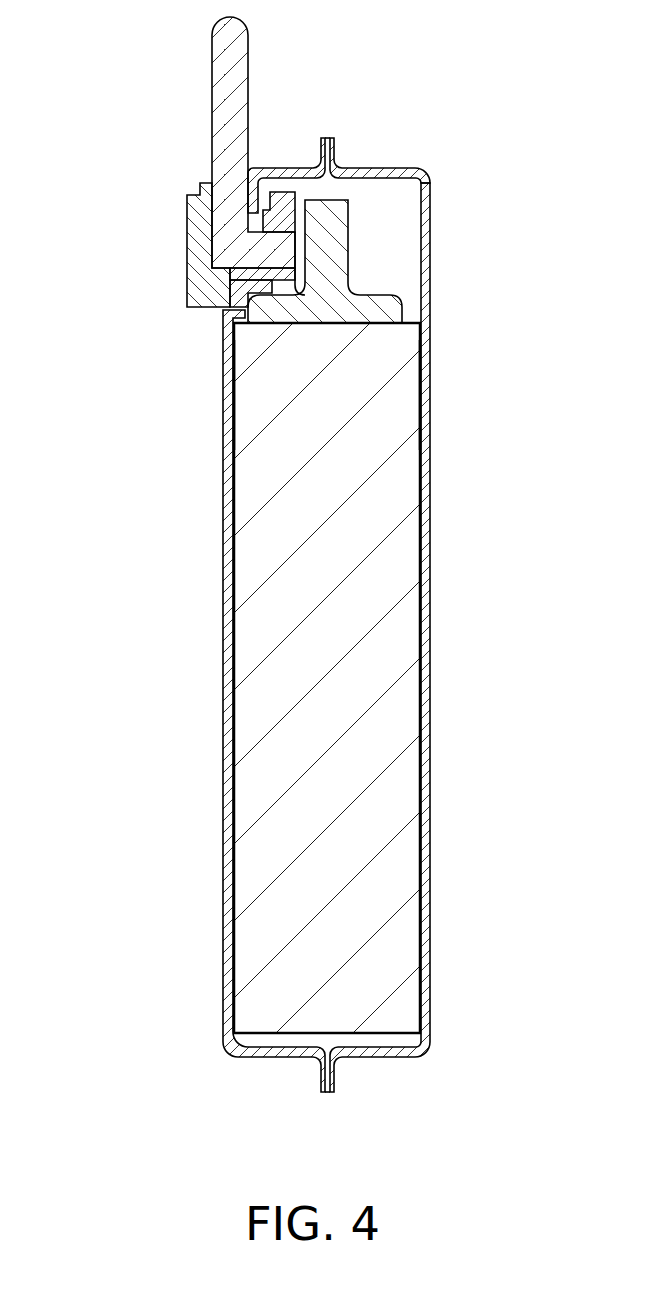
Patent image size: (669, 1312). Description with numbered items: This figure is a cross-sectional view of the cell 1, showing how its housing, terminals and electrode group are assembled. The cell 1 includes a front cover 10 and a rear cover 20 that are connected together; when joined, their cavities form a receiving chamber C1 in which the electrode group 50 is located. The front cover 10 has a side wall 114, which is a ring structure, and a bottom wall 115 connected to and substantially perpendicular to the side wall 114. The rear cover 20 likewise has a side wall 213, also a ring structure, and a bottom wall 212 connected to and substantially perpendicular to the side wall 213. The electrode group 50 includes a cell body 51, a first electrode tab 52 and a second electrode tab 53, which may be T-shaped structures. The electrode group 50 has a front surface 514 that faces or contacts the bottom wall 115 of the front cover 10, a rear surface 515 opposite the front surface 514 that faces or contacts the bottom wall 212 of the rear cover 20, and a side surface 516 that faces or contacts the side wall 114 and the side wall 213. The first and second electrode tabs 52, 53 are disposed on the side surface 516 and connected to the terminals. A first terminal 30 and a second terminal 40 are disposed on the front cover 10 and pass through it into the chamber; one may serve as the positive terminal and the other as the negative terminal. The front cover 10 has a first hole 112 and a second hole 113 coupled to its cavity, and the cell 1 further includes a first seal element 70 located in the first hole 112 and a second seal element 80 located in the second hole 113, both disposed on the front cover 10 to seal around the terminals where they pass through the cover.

The cell 1 is at (500, 30).
The front cover 10 is at (232, 596).
The rear cover 20 is at (424, 596).
The first terminal 30 is at (190, 142).
The second terminal 40 is at (201, 118).
The electrode group 50 is at (402, 631).
The cell body 51 is at (363, 595).
The first electrode tab 52 is at (402, 261).
The second electrode tab 53 is at (362, 246).
The first seal element 70 is at (144, 245).
The second seal element 80 is at (187, 253).
The first hole 112 is at (161, 250).
The second hole 113 is at (236, 294).
The side wall 114 is at (286, 170).
The bottom wall 115 is at (227, 458).
The bottom wall 212 is at (425, 458).
The side wall 213 is at (382, 168).
The front surface 514 is at (226, 394).
The rear surface 515 is at (423, 391).
The side surface 516 is at (324, 321).
The receiving chamber C1 is at (408, 216).